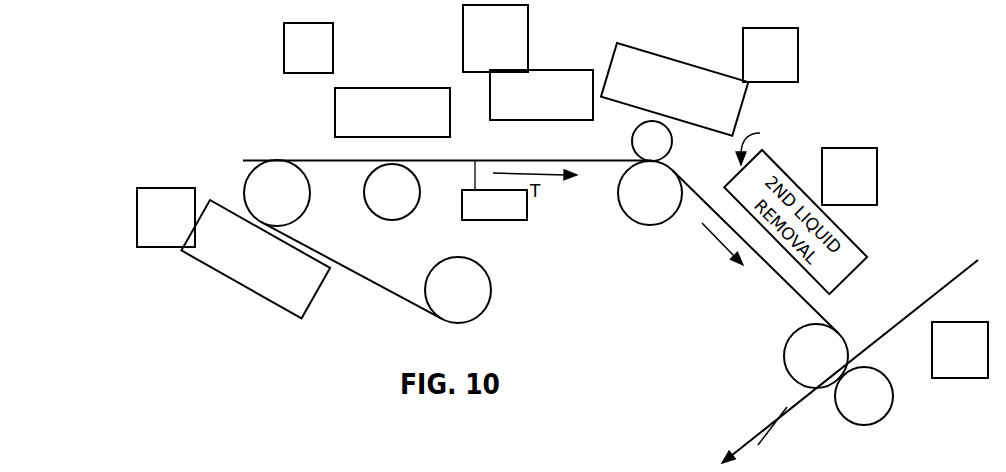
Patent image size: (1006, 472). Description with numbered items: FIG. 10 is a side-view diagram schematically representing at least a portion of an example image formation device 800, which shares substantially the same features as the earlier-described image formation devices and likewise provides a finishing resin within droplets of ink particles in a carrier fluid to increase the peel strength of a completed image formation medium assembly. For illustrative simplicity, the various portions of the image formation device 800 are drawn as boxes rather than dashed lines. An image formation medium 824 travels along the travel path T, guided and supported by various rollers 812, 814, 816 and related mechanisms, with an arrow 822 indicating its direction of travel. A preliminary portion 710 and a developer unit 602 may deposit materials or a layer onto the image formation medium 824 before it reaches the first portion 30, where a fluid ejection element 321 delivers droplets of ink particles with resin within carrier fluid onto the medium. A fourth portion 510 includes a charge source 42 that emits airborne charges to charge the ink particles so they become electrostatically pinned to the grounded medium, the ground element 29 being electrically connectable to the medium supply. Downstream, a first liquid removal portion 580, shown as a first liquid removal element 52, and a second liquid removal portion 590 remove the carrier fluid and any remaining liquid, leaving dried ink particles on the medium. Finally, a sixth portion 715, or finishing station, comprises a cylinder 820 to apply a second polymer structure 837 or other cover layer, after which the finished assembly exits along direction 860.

The image formation device 800 is at (189, 76).
The first portion 30 is at (308, 48).
The fourth portion 510 is at (495, 38).
The first liquid removal portion 580 is at (770, 55).
The second liquid removal portion 590 is at (849, 176).
The preliminary portion 710 is at (166, 217).
The sixth portion 715 is at (960, 350).
The fluid ejection device 321 is at (336, 104).
The charge source 42 is at (558, 70).
The ground element 29 is at (490, 220).
The first liquid removal unit 52 is at (683, 62).
The developer unit 602 is at (242, 287).
The image formation medium 824 is at (312, 158).
The belt movement direction 822 is at (238, 170).
The roller 812 is at (310, 203).
The roller 814 is at (421, 190).
The roller 816 is at (618, 191).
The second polymer structure 837 is at (916, 308).
The cylinder 820 is at (891, 409).
The media transport direction 860 is at (833, 425).